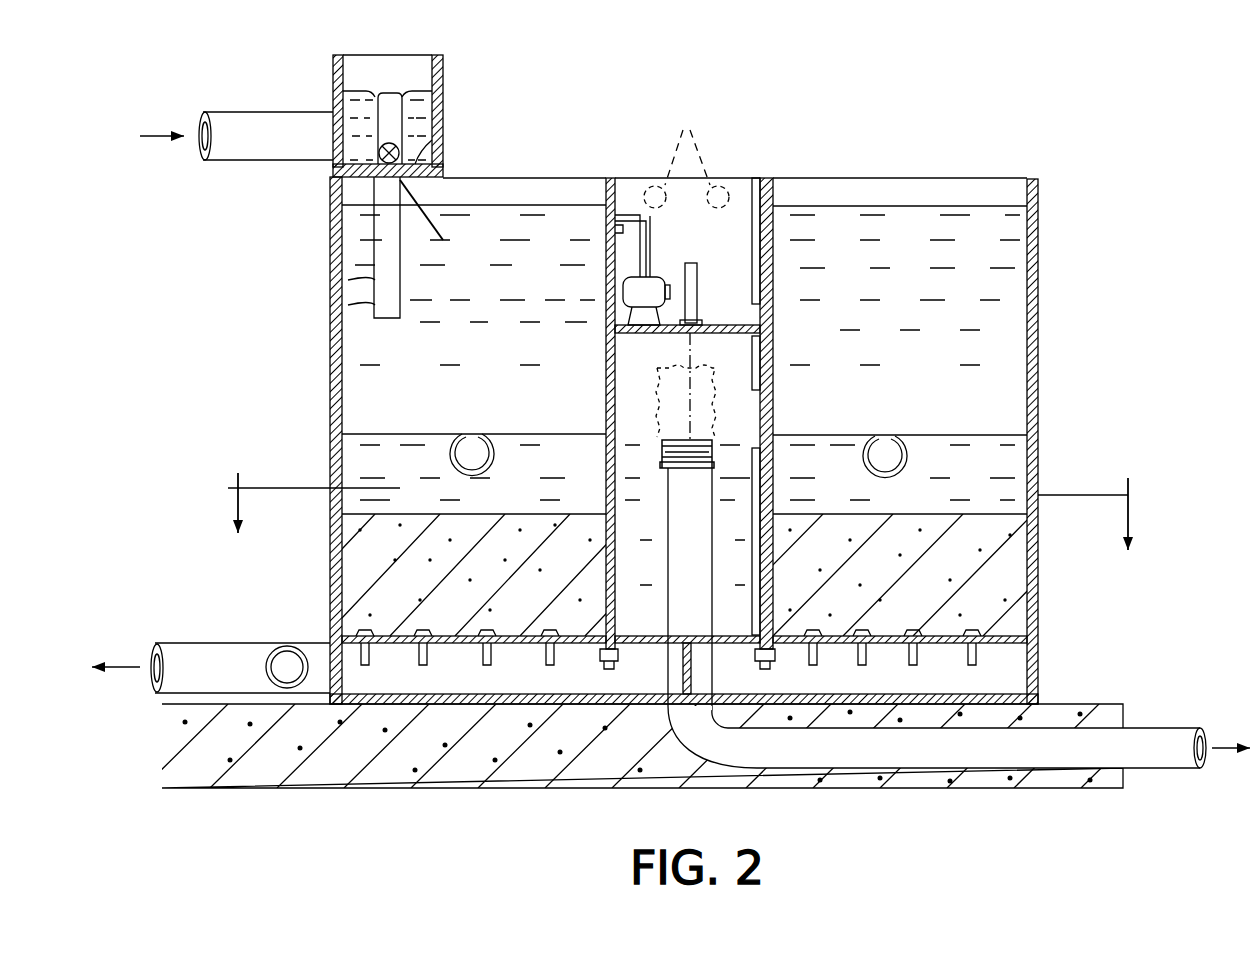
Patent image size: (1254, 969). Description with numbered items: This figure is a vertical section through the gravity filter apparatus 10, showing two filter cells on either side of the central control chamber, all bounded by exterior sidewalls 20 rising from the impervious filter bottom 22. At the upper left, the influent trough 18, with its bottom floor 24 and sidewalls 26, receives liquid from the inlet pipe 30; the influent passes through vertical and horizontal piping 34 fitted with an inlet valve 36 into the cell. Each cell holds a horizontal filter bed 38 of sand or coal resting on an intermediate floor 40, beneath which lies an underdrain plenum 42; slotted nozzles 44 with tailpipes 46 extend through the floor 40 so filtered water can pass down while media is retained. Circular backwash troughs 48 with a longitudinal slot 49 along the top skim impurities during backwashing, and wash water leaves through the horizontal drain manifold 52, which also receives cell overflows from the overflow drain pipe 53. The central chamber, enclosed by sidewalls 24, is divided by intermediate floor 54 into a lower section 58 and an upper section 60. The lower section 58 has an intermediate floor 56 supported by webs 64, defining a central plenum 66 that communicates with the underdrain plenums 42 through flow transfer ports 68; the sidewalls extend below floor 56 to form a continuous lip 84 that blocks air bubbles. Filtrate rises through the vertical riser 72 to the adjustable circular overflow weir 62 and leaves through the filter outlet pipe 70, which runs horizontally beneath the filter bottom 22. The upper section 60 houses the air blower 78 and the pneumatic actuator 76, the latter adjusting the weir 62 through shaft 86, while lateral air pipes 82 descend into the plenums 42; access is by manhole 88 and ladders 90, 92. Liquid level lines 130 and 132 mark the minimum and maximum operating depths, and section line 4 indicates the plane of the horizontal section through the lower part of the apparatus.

The section line 4- 4 is at (683, 511).
The gravity filter apparatus 10 is at (996, 143).
The influent trough 18 is at (400, 60).
The exterior sidewalls 20 is at (1038, 250).
The filter bottom 22 is at (485, 700).
The bottom floor / chamber sidewalls 24 is at (444, 133).
The trough sidewalls 26 is at (333, 62).
The inlet pipe 30 is at (258, 128).
The vertical and horizontal piping 34 is at (393, 120).
The inlet valve 36 is at (412, 253).
The filter bed 38 is at (350, 545).
The intermediate floor 40 is at (526, 630).
The underdrain plenum 42 is at (458, 700).
The slotted nozzles 44 is at (430, 630).
The tailpipes 46 is at (372, 655).
The backwash trough 48 is at (495, 462).
The longitudinal slot 49 is at (470, 434).
The horizontal drain manifold 52 is at (216, 652).
The overflow drain pipe 53 is at (687, 140).
The intermediate floor 54 is at (606, 350).
The intermediate floor 56 is at (668, 615).
The lower section 58 is at (773, 500).
The upper section 60 is at (758, 250).
The circular overflow weir 62 is at (664, 443).
The webs 64 is at (682, 672).
The central plenum 66 is at (737, 673).
The flow transfer ports 68 is at (642, 636).
The filter outlet pipe 70 is at (925, 760).
The vertical riser 72 is at (706, 572).
The pneumatic actuator 76 is at (690, 265).
The air blower 78 is at (645, 290).
The lateral air pipes 82 is at (606, 292).
The continuous lip / openings 84 is at (768, 672).
The shaft 86 is at (693, 355).
The manhole 88 is at (730, 322).
The ladder 90 is at (757, 180).
The ladder 92 is at (762, 368).
The low liquid level 130 is at (385, 434).
The upper liquid level 132 is at (520, 205).